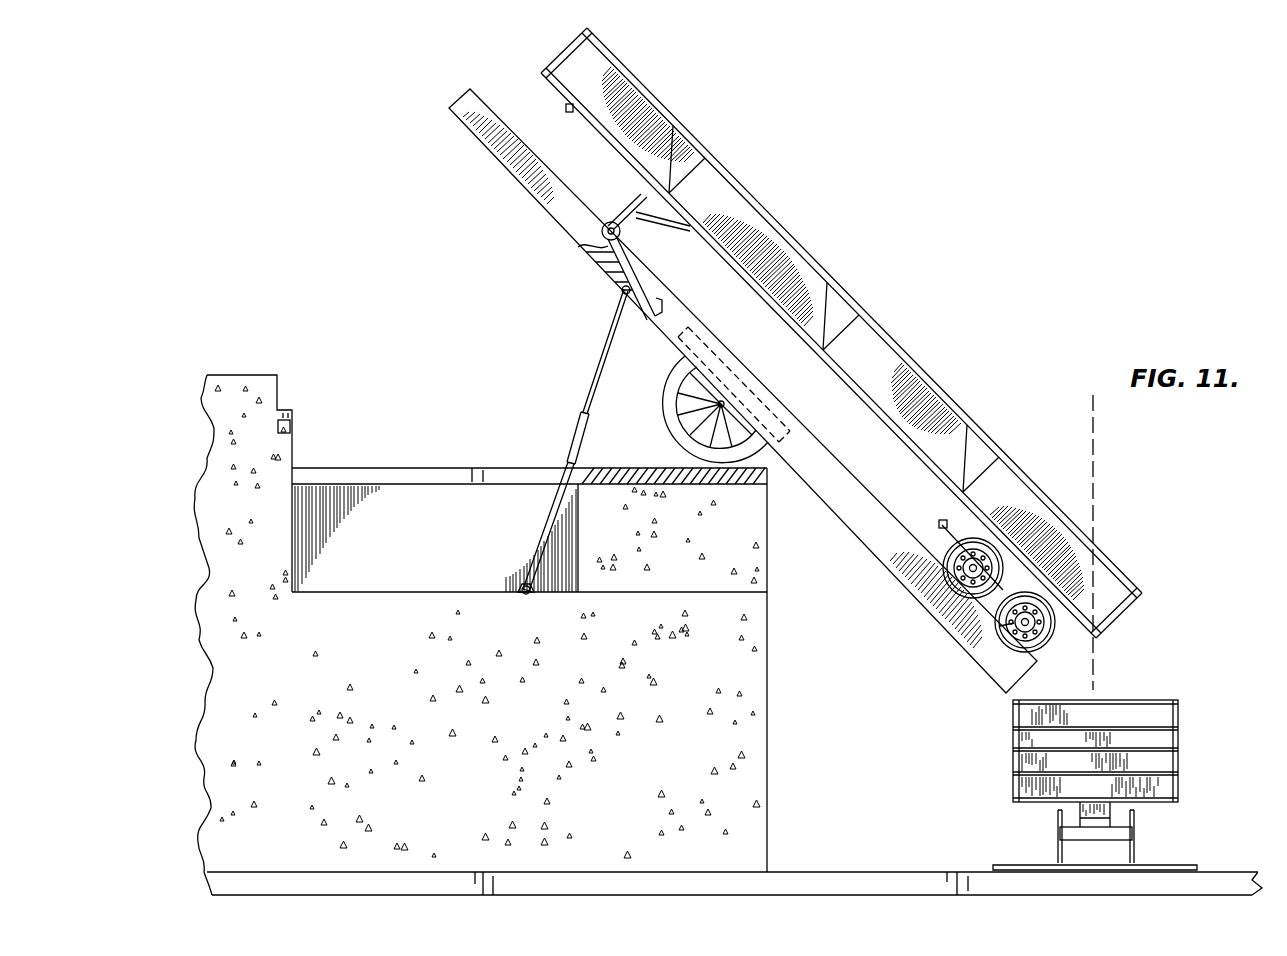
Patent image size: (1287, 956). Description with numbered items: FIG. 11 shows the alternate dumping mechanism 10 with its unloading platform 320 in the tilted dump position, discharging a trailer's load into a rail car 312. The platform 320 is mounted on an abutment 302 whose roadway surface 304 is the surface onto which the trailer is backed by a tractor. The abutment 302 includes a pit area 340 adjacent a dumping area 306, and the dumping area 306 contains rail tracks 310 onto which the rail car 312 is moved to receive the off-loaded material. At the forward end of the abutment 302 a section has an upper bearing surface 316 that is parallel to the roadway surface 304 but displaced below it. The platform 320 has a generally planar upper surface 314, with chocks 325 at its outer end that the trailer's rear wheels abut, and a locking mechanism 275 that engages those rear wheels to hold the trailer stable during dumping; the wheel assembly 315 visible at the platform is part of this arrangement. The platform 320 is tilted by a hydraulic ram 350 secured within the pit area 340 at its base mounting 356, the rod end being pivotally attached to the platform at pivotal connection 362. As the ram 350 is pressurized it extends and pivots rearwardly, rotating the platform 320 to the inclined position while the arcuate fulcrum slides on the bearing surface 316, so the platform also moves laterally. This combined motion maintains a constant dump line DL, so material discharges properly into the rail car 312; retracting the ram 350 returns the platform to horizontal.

The conveyor unloading apparatus 10 is at (798, 360).
The locking mechanism 275 is at (1000, 640).
The abutment 302 is at (511, 726).
The roadway surface 304 is at (233, 375).
The dumping area 306 is at (860, 753).
The rail tracks 310 is at (1137, 858).
The rail car 312 is at (1180, 736).
The upper surface 314 is at (686, 304).
The sprocket wheel 315 is at (661, 410).
The bearing surface 316 is at (767, 477).
The platform 320 is at (826, 482).
The chocks 325 is at (1037, 658).
The pit area 340 is at (412, 541).
The hydraulic ram 350 is at (557, 492).
The cylinder base pivot 356 is at (523, 585).
The pivotal connection 362 is at (618, 289).
The dump line DL is at (1097, 488).